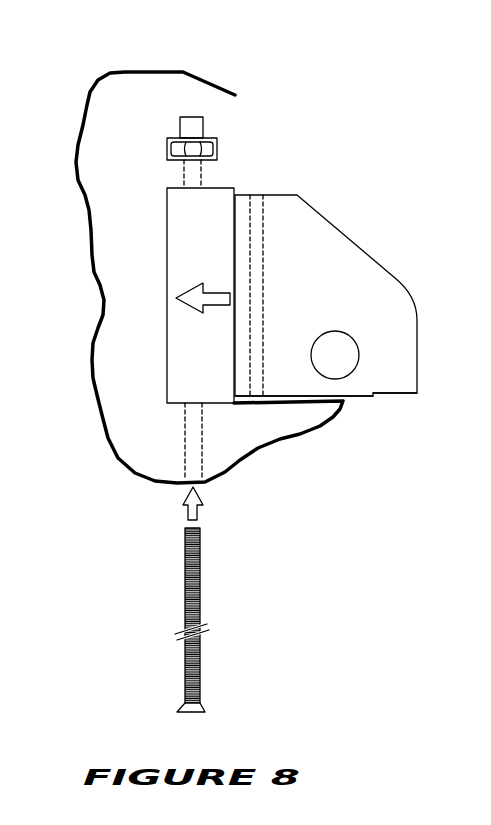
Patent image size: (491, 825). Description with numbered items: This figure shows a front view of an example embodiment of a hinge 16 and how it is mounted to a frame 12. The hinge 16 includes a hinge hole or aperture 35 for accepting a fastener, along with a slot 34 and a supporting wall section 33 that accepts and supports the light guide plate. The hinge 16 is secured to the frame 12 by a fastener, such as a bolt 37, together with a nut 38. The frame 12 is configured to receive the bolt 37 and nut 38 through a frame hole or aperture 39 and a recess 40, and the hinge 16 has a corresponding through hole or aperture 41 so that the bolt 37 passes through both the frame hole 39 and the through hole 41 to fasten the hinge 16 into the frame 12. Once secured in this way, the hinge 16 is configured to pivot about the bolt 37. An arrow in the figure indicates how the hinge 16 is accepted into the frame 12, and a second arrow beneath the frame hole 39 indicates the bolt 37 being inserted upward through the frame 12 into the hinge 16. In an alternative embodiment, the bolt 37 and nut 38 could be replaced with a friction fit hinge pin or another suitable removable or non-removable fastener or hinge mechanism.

The frame 12 is at (130, 298).
The hinge 16 is at (318, 258).
The supporting wall section 33 is at (365, 398).
The slot 34 is at (397, 393).
The hinge hole or aperture 35 is at (357, 343).
The fastener, such as a bolt 37 is at (183, 555).
The nut 38 is at (212, 150).
The frame hole or aperture 39 is at (193, 465).
The recess 40 is at (191, 117).
The through hole or aperture 41 is at (259, 195).